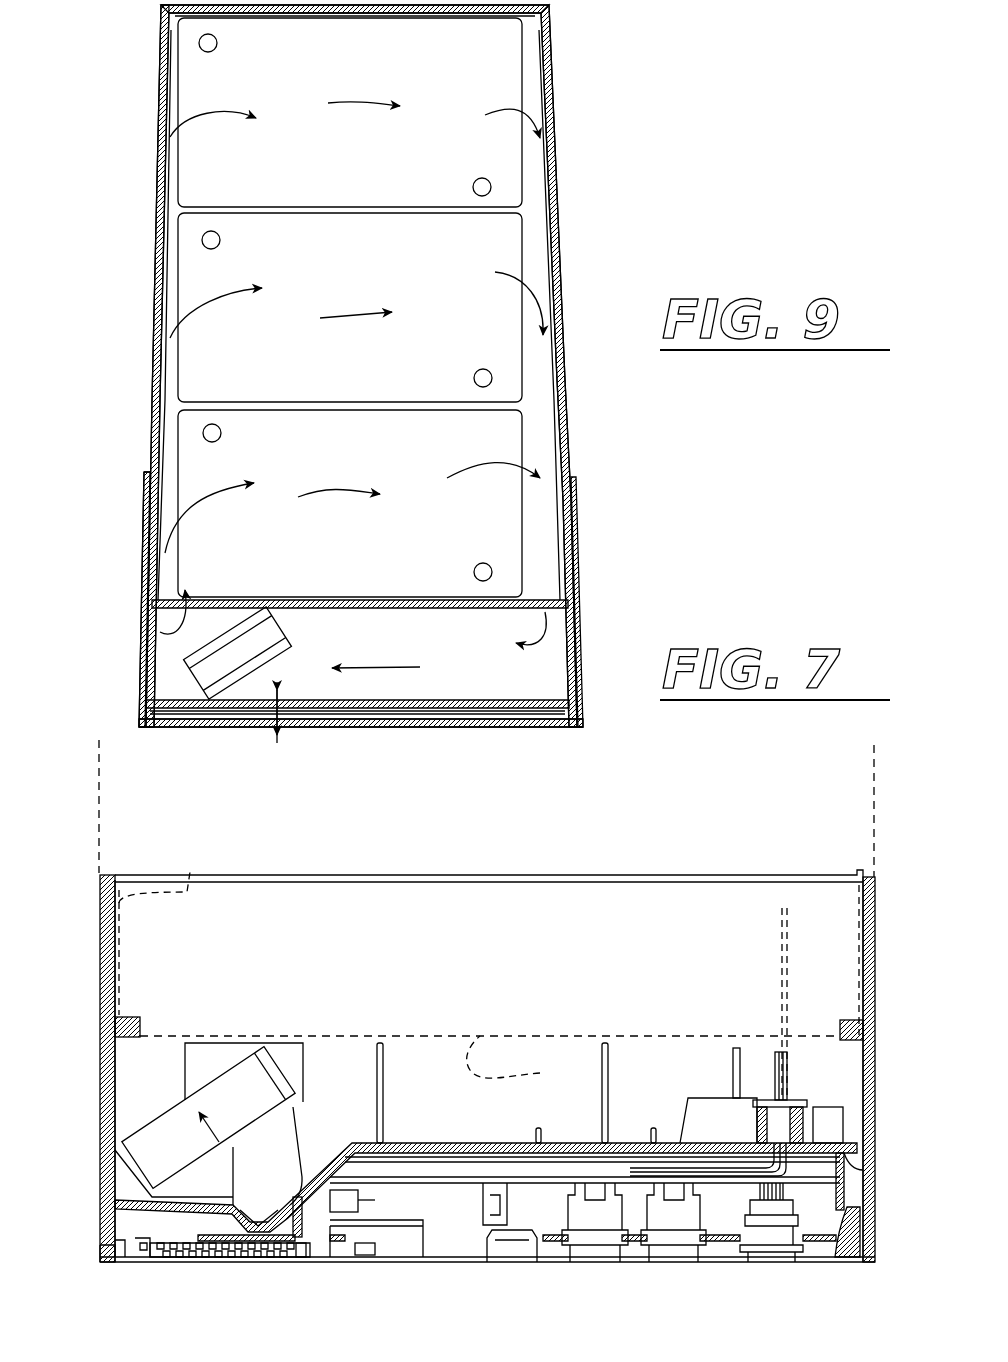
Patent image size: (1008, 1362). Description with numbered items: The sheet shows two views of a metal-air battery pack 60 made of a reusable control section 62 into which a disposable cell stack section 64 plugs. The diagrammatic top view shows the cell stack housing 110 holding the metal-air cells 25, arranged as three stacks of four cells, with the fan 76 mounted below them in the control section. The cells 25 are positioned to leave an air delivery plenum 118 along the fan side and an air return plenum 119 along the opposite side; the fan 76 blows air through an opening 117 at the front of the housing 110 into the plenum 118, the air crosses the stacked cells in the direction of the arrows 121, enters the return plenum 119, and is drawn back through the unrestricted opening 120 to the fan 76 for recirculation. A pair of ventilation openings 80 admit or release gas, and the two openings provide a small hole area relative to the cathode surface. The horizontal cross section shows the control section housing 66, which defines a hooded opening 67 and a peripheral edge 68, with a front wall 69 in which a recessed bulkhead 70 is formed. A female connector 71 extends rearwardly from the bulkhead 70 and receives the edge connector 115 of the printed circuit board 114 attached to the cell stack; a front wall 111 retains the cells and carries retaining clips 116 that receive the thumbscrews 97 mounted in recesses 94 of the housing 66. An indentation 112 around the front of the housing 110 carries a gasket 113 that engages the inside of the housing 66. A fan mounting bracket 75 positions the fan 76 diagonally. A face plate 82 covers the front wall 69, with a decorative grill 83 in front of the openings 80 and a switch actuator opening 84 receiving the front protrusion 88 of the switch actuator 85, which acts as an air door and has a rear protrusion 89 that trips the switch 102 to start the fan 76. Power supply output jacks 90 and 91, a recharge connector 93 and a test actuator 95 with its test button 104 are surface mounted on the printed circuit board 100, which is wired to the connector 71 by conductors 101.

In FIG. 9, the metal-air cells 25 is at (352, 154).
In FIG. 9, the metal-air battery pack 60 is at (608, 329).
In FIG. 7, the metal-air battery pack 60 is at (895, 887).
In FIG. 9, the control section 62 is at (587, 678).
In FIG. 9, the cell stack section 64 is at (140, 173).
In FIG. 9, the housing 66 is at (575, 550).
In FIG. 7, the housing 66 is at (115, 958).
In FIG. 7, the hooded opening 67 is at (674, 915).
In FIG. 9, the peripheral edge 68 is at (569, 455).
In FIG. 7, the peripheral edge 68 is at (103, 872).
In FIG. 7, the front wall 69 is at (103, 1238).
In FIG. 7, the bulkhead 70 is at (460, 1140).
In FIG. 7, the female connector 71 is at (795, 1084).
In FIG. 7, the fan mounting bracket 75 is at (312, 1065).
In FIG. 9, the fan 76 is at (190, 672).
In FIG. 7, the fan 76 is at (160, 1130).
In FIG. 9, the ventilation openings 80 is at (287, 696).
In FIG. 7, the ventilation openings 80 is at (250, 1207).
In FIG. 7, the face plate 82 is at (118, 1265).
In FIG. 7, the decorative grill 83 is at (183, 1258).
In FIG. 7, the switch actuator opening 84 is at (305, 1258).
In FIG. 7, the switch actuator 85 is at (357, 1258).
In FIG. 7, the front protrusion 88 is at (350, 1258).
In FIG. 7, the protrusion 89 is at (295, 1200).
In FIG. 7, the power supply output jack 90 is at (596, 1262).
In FIG. 7, the power supply output jack 91 is at (670, 1262).
In FIG. 7, the recharge connector 93 is at (772, 1262).
In FIG. 7, the recesses 94 is at (280, 1130).
In FIG. 7, the test actuator 95 is at (495, 1213).
In FIG. 7, the thumbscrews 97 is at (730, 1085).
In FIG. 7, the printed circuit board 100 is at (392, 1175).
In FIG. 7, the conductors 101 is at (783, 1203).
In FIG. 7, the switch 102 is at (357, 1197).
In FIG. 7, the test button 104 is at (520, 1255).
In FIG. 9, the cell stack housing 110 is at (552, 66).
In FIG. 7, the cell stack housing 110 is at (870, 783).
In FIG. 7, the front wall 111 is at (522, 1057).
In FIG. 7, the indentation 112 is at (185, 867).
In FIG. 7, the gasket 113 is at (130, 1012).
In FIG. 7, the printed circuit board 114 is at (782, 923).
In FIG. 7, the edge connector 115 is at (755, 1058).
In FIG. 7, the retaining clips 116 is at (690, 1055).
In FIG. 9, the opening 117 is at (160, 612).
In FIG. 9, the air delivery plenum 118 is at (165, 280).
In FIG. 9, the air return plenum 119 is at (560, 258).
In FIG. 9, the opening 120 is at (575, 615).
In FIG. 9, the arrows 121 is at (360, 103).